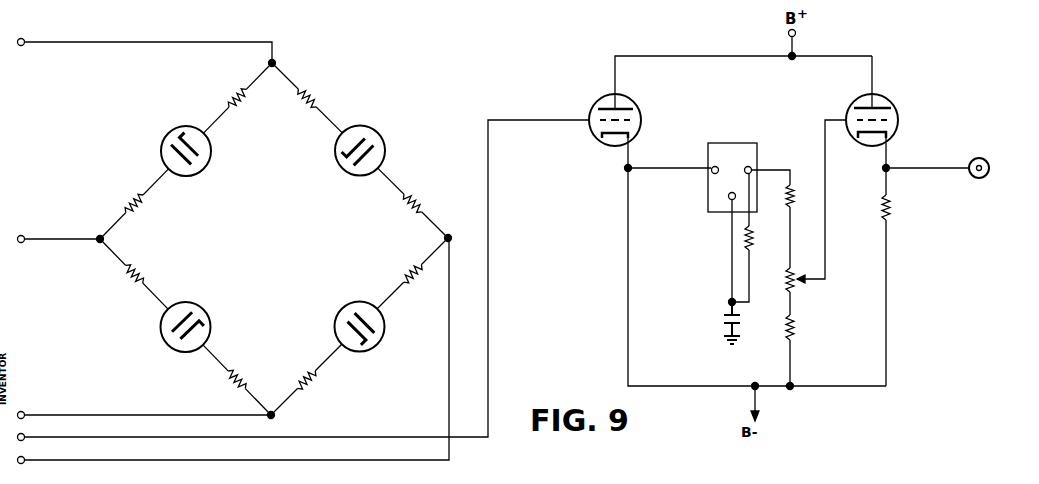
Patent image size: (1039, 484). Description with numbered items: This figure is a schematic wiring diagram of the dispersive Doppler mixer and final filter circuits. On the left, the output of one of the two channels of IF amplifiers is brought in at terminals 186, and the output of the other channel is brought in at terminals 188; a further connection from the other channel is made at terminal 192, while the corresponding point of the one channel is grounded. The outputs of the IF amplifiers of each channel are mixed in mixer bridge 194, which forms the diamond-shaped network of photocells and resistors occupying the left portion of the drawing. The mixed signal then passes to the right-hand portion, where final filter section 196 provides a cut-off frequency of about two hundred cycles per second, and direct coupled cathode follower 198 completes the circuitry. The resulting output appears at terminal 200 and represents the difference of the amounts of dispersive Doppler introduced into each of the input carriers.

The terminals 186 is at (21, 46).
The terminals 188 is at (21, 243).
The terminal 192 is at (21, 433).
The mixer bridge 194 is at (281, 241).
The final filter section 196 is at (758, 140).
The direct coupled cathode follower 198 is at (926, 95).
The output terminal 200 is at (989, 172).